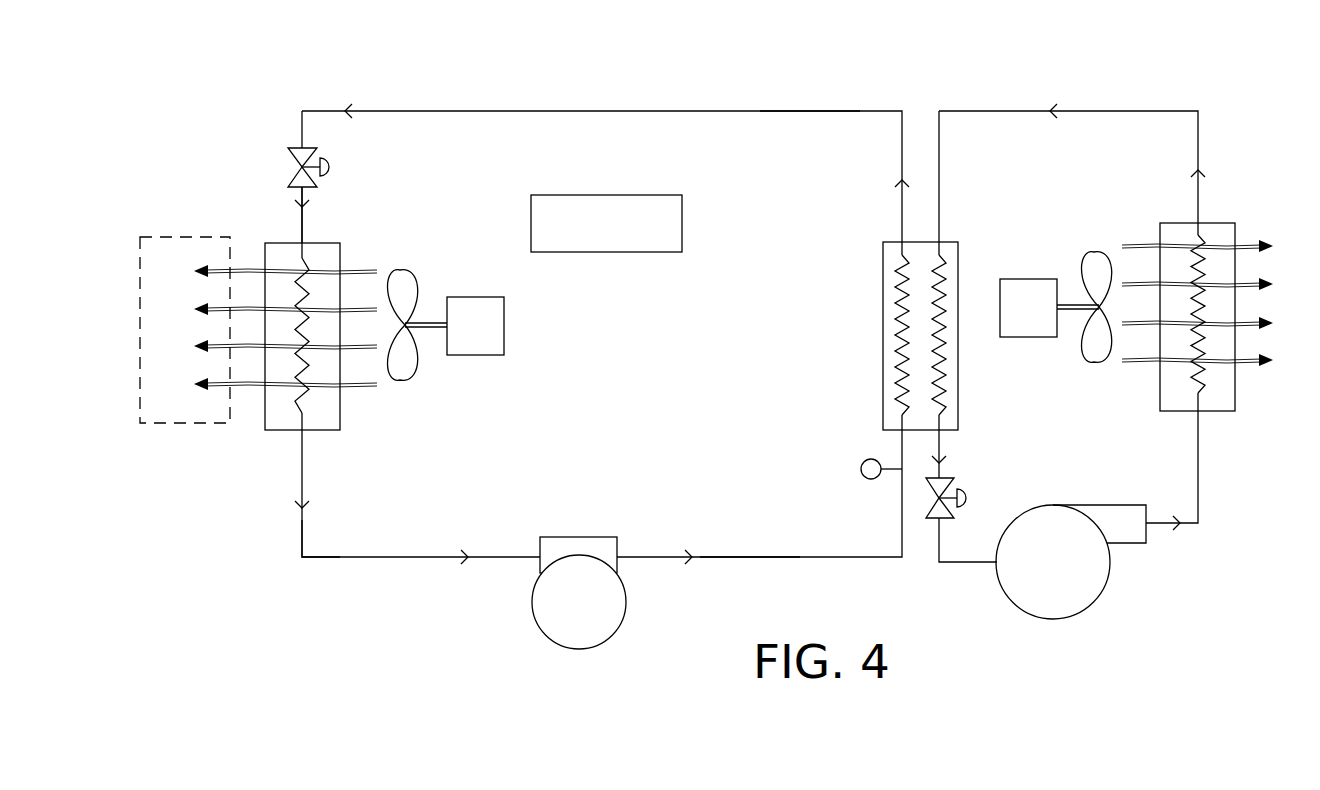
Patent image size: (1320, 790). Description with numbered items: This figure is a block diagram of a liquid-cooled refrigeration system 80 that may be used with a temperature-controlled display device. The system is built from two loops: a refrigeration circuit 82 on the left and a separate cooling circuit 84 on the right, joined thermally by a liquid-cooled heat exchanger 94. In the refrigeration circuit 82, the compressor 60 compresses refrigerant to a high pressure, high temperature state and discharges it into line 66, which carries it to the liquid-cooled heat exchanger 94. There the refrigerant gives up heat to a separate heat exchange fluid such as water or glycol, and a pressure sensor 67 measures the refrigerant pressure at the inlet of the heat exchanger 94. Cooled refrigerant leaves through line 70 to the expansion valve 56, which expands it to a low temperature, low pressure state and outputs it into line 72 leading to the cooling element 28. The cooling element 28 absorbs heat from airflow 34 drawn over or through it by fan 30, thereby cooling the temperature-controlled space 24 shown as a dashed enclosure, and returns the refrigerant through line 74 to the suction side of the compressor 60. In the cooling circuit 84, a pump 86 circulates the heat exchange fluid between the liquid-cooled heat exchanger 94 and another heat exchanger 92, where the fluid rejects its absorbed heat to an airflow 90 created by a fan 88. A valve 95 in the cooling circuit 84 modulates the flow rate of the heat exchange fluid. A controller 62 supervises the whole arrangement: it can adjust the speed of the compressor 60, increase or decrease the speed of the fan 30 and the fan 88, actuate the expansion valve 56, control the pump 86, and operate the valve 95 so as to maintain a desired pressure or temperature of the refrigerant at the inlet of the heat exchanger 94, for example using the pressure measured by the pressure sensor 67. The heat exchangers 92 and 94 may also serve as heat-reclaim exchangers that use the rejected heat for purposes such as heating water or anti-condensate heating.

The liquid-cooled refrigeration system 80 is at (224, 118).
The refrigeration circuit 82 is at (602, 334).
The cooling circuit 84 is at (1068, 333).
The temperature-controlled space 24 is at (150, 242).
The cooling element 28 is at (334, 245).
The fan 30 is at (496, 300).
The airflow 34 is at (367, 388).
The expansion valve 56 is at (333, 165).
The compressor 60 is at (607, 546).
The controller 62 is at (672, 243).
The line 66 is at (745, 554).
The pressure sensor 67 is at (860, 470).
The line 70 is at (811, 108).
The line 72 is at (299, 206).
The line 74 is at (299, 556).
The pump 86 is at (1092, 514).
The fan 88 is at (1052, 280).
The airflow 90 is at (1134, 245).
The heat exchanger 92 is at (1228, 230).
The liquid-cooled heat exchanger 94 is at (950, 246).
The valve 95 is at (968, 496).